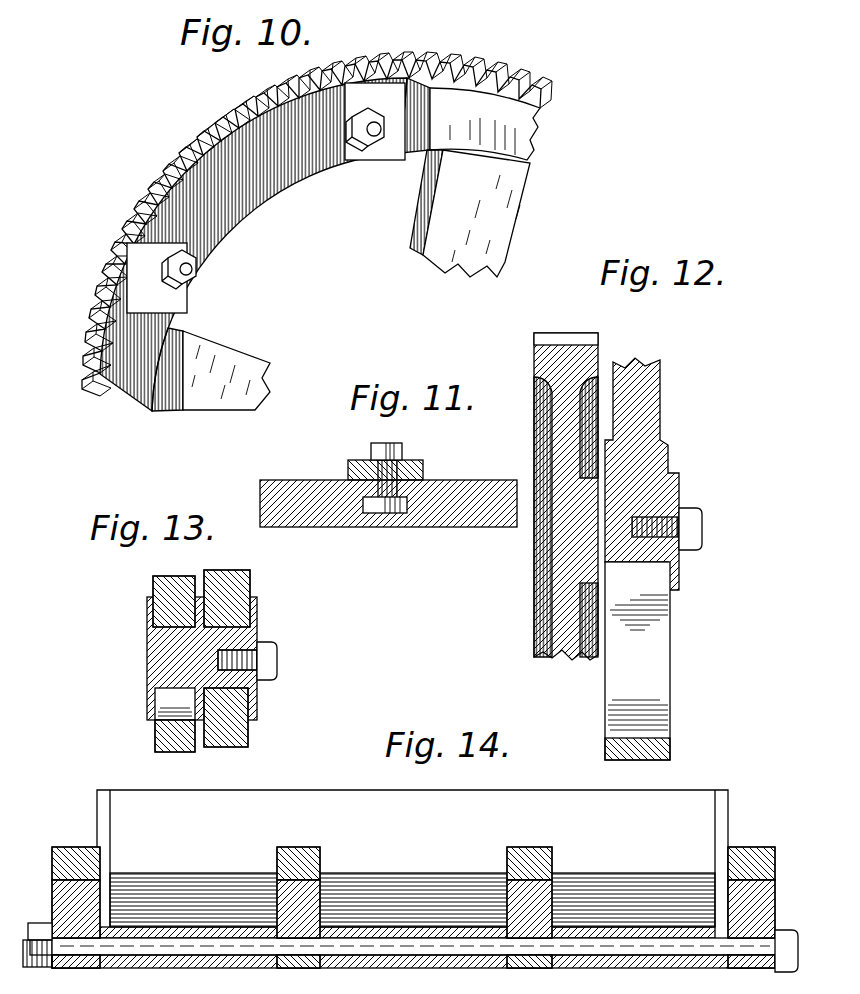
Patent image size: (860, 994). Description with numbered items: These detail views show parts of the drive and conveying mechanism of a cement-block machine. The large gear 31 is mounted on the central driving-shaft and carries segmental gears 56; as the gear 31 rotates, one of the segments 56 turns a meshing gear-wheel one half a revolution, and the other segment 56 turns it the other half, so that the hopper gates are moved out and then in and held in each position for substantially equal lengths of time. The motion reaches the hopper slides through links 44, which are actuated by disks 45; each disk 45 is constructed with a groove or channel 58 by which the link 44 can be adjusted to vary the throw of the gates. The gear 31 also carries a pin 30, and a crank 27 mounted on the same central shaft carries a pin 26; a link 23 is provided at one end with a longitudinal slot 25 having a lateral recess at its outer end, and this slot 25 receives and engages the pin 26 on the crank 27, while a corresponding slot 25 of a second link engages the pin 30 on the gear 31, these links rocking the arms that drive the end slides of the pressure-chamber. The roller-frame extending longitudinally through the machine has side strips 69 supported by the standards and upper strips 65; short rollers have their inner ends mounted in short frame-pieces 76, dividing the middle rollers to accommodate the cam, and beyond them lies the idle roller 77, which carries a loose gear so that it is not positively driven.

In FIG. 10, the gear 31 is at (440, 84).
In FIG. 12, the gear 31 is at (557, 580).
In FIG. 10, the segmental gears 56 is at (227, 150).
In FIG. 11, the links 44 is at (410, 470).
In FIG. 11, the disks 45 is at (310, 520).
In FIG. 11, the grooves 58 is at (405, 515).
In FIG. 12, the pin 30 is at (642, 548).
In FIG. 12, the longitudinal slots 25 is at (648, 683).
In FIG. 13, the longitudinal slots 25 is at (172, 714).
In FIG. 13, the pin 26 is at (147, 672).
In FIG. 13, the link 23 is at (172, 746).
In FIG. 13, the crank 27 is at (230, 730).
In FIG. 14, the roller 77 is at (348, 803).
In FIG. 14, the short frame-pieces 76 is at (323, 873).
In FIG. 14, the upper strips 65 is at (62, 846).
In FIG. 14, the side strips 69 is at (60, 908).